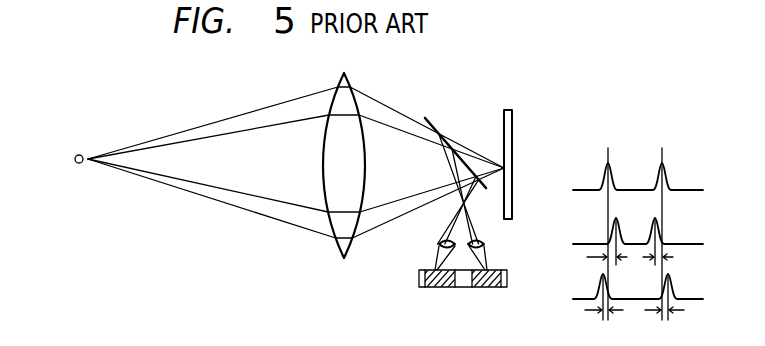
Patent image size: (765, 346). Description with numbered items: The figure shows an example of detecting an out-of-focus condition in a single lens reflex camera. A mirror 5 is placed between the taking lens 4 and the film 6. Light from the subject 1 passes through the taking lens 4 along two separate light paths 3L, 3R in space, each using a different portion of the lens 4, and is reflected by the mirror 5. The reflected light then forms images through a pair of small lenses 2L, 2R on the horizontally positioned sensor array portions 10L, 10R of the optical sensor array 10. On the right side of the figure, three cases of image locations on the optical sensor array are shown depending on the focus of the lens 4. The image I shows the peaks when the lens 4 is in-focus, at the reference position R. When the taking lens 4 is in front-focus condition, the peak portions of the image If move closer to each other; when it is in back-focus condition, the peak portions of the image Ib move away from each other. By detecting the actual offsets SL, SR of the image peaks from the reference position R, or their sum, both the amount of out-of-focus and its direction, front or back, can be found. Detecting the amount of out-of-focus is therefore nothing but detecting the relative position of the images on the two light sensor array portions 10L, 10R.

The subject 1 is at (80, 151).
The right light path 3R is at (238, 116).
The left light path 3L is at (236, 208).
The taking lens 4 is at (326, 134).
The mirror 5 is at (438, 117).
The film 6 is at (511, 120).
The left small lens 2L is at (437, 244).
The right small lens 2R is at (486, 244).
The optical sensor array 10 is at (444, 299).
The left sensor array portion 10L is at (440, 289).
The right sensor array portion 10R is at (491, 289).
The reference position R is at (607, 204).
The in-focus image I is at (665, 170).
The front-focus image If is at (664, 232).
The back-focus image Ib is at (672, 285).
The left offset SL is at (606, 262).
The right offset SR is at (661, 262).